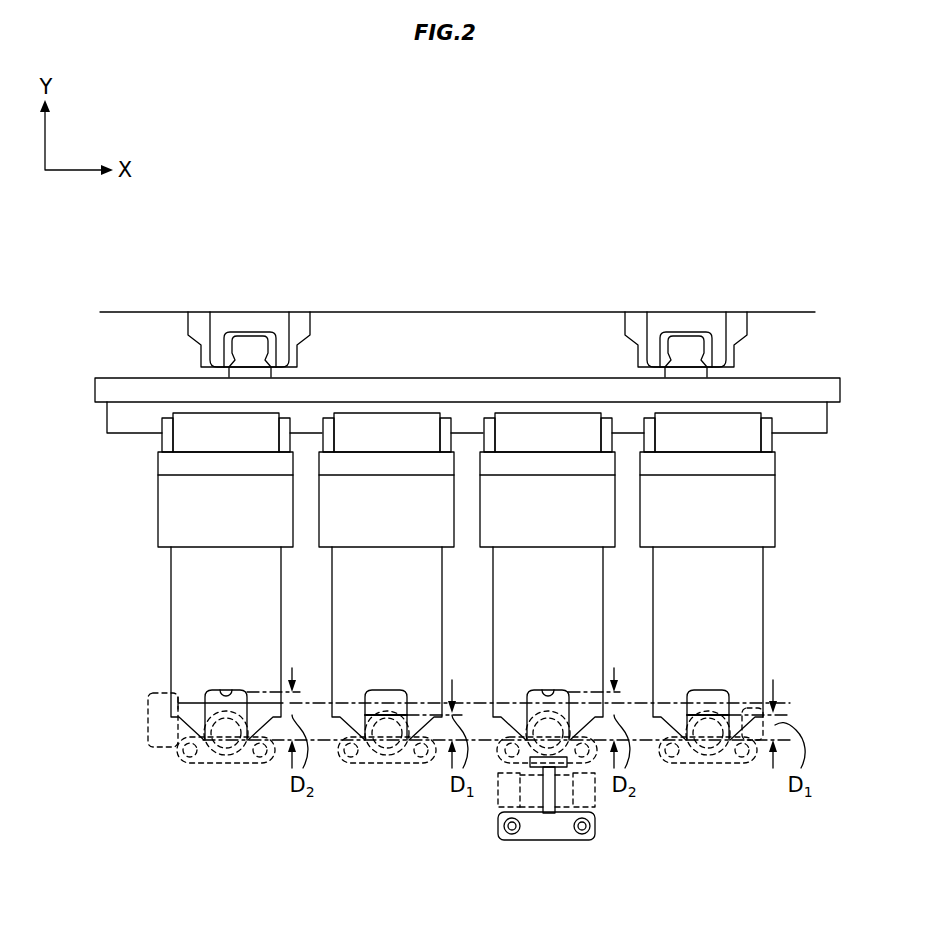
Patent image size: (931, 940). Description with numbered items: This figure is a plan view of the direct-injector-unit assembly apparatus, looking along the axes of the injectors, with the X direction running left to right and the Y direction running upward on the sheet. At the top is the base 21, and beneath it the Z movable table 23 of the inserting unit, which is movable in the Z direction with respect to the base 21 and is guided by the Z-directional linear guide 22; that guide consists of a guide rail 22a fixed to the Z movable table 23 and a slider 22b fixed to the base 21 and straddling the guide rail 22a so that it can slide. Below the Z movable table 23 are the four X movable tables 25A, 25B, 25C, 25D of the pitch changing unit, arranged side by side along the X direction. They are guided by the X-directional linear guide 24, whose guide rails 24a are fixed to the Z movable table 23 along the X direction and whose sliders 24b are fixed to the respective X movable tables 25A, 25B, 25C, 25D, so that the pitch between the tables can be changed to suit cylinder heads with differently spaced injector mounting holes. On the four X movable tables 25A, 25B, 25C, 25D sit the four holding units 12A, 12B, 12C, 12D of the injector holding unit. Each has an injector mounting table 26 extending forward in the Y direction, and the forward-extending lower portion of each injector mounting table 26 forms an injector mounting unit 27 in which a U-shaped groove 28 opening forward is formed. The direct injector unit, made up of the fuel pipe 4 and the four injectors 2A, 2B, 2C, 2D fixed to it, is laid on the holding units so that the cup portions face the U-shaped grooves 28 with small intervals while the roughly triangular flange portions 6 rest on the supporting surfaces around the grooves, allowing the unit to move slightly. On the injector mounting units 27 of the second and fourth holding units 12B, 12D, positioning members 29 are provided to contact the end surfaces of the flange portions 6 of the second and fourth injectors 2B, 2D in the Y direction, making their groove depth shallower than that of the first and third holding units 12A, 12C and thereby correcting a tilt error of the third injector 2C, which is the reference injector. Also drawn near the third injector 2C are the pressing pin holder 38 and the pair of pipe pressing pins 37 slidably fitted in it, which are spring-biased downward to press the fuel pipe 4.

The base 21 is at (452, 306).
The Z-directional linear guide 22 is at (467, 285).
The guide rail 22a is at (248, 355).
The slider 22b is at (272, 325).
The Z movable table 23 is at (118, 390).
The X-directional linear guide 24 is at (419, 459).
The guide rails 24a is at (145, 418).
The sliders 24b is at (202, 438).
The X movable table 25A is at (175, 464).
The X movable table 25B is at (385, 463).
The X movable table 25C is at (548, 463).
The X movable table 25D is at (752, 463).
The holding unit 12A is at (310, 643).
The holding unit 12B is at (508, 643).
The holding unit 12C is at (488, 578).
The holding unit 12D is at (772, 580).
The injector mounting table 26 is at (195, 603).
The injector mounting unit 27 is at (192, 712).
The U-shaped groove 28 is at (226, 690).
The positioning member 29 is at (386, 692).
The fuel pipe 4 is at (157, 730).
The flange portion 6 is at (198, 765).
The injector 2A is at (229, 772).
The injector 2B is at (389, 772).
The injector 2C is at (596, 765).
The injector 2D is at (712, 772).
The pipe pressing pin 37 is at (507, 815).
The pressing pin holder 38 is at (545, 827).